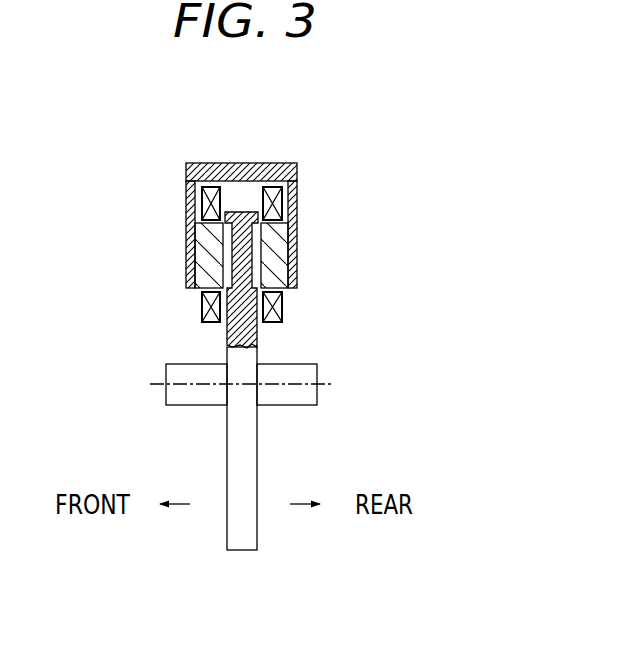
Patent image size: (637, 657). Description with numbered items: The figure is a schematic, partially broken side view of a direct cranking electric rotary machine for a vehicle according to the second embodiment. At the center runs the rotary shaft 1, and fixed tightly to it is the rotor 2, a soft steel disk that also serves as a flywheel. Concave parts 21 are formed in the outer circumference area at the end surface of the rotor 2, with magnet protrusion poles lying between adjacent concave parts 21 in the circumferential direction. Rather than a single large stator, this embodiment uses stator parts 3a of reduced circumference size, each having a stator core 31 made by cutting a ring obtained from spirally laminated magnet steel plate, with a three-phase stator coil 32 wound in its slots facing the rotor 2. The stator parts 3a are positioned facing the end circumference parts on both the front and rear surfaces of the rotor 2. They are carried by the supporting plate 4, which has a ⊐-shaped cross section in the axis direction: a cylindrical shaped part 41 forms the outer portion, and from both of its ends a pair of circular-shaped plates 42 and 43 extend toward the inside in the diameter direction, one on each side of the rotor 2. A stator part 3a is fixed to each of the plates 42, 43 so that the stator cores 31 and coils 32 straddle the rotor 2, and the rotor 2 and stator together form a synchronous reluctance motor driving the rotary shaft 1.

The rotary shaft 1 is at (191, 395).
The rotor 2 is at (236, 478).
The stator part 3a is at (193, 299).
The supporting plate 4 is at (248, 181).
The concave part 21 is at (200, 285).
The stator core 31 is at (197, 257).
The stator coil 32 is at (203, 190).
The cylindrical shaped part 41 is at (275, 169).
The circular-shaped plate 42 is at (188, 225).
The circular-shaped plate 43 is at (297, 222).